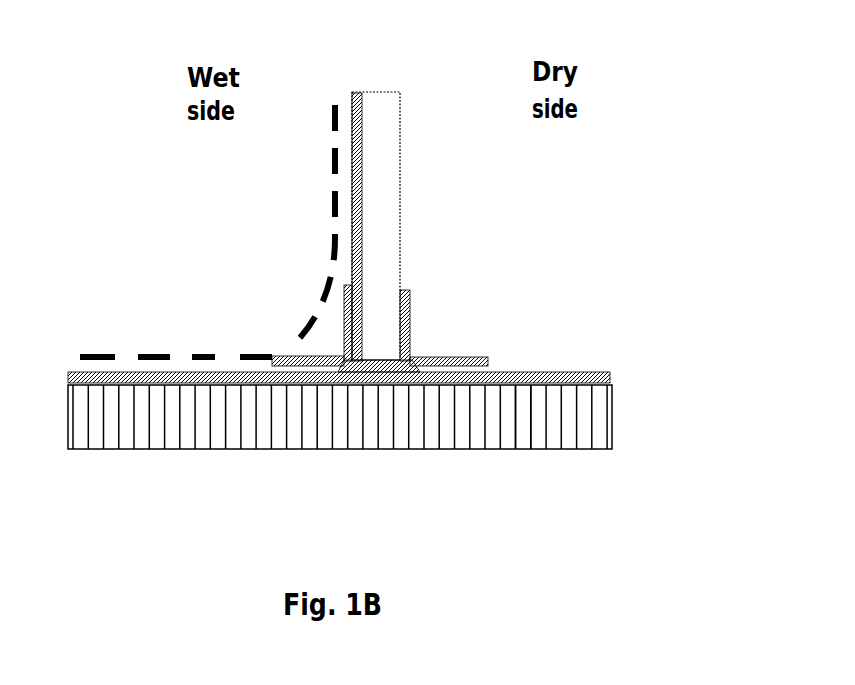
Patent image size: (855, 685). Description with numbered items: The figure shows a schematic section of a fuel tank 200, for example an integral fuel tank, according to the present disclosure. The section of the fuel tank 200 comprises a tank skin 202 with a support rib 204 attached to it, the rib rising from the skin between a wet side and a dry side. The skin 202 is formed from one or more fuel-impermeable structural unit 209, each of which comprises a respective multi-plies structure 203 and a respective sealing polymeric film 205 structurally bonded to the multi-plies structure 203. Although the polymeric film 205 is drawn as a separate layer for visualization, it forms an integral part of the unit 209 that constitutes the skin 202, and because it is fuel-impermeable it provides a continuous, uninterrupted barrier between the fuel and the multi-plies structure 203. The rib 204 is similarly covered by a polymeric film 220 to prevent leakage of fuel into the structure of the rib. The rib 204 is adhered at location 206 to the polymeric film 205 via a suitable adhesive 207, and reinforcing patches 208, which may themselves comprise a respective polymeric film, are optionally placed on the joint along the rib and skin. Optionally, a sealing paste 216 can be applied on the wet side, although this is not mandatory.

The fuel tank 200 is at (123, 104).
The tank skin 202 is at (641, 370).
The multi-plies structure 203 is at (532, 437).
The support rib 204 is at (387, 218).
The sealing polymeric film 205 is at (580, 377).
The location 206 is at (366, 378).
The adhesive 207 is at (389, 370).
The reinforcing patches 208 is at (348, 330).
The fuel-impermeable structural unit 209 is at (572, 218).
The sealing paste 216 is at (198, 350).
The polymeric film 220 is at (355, 105).